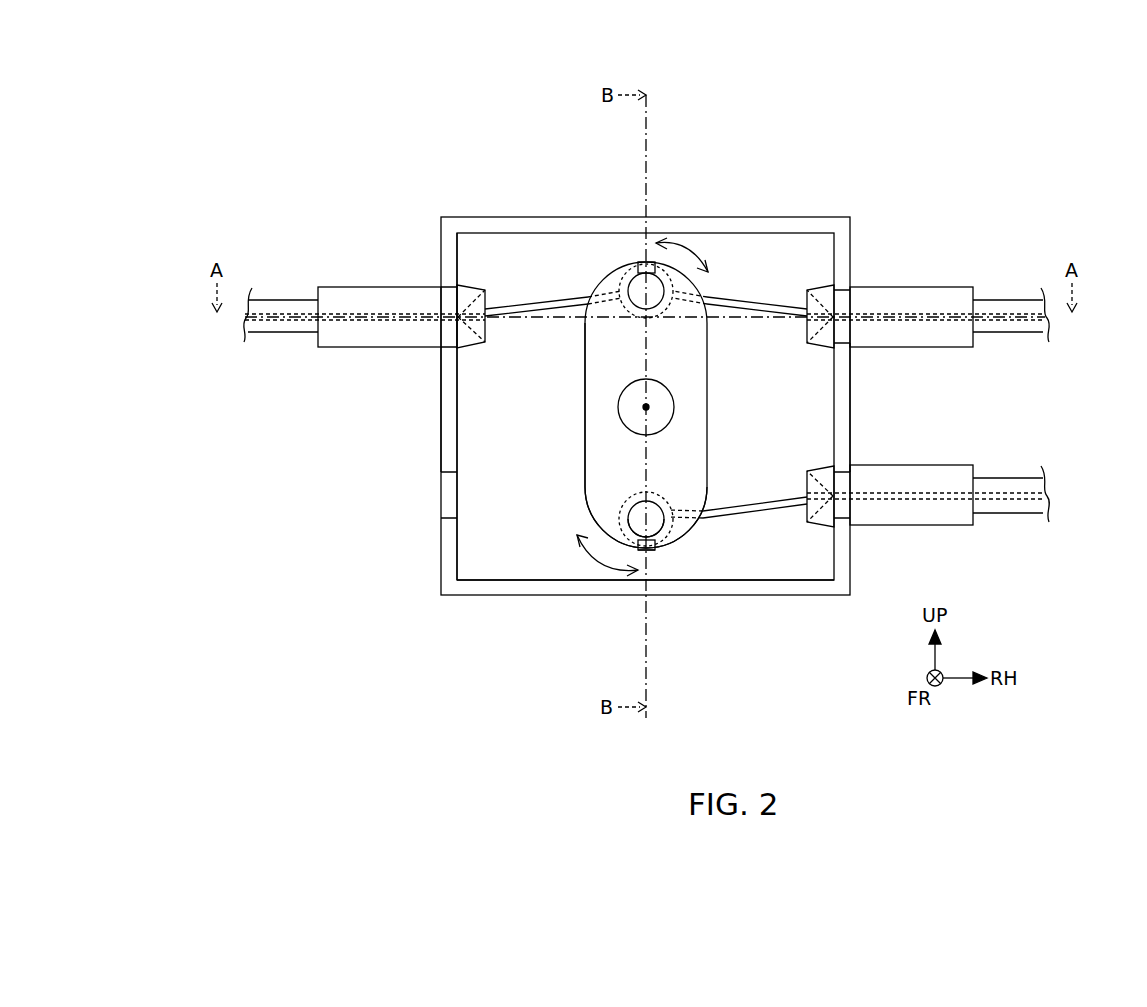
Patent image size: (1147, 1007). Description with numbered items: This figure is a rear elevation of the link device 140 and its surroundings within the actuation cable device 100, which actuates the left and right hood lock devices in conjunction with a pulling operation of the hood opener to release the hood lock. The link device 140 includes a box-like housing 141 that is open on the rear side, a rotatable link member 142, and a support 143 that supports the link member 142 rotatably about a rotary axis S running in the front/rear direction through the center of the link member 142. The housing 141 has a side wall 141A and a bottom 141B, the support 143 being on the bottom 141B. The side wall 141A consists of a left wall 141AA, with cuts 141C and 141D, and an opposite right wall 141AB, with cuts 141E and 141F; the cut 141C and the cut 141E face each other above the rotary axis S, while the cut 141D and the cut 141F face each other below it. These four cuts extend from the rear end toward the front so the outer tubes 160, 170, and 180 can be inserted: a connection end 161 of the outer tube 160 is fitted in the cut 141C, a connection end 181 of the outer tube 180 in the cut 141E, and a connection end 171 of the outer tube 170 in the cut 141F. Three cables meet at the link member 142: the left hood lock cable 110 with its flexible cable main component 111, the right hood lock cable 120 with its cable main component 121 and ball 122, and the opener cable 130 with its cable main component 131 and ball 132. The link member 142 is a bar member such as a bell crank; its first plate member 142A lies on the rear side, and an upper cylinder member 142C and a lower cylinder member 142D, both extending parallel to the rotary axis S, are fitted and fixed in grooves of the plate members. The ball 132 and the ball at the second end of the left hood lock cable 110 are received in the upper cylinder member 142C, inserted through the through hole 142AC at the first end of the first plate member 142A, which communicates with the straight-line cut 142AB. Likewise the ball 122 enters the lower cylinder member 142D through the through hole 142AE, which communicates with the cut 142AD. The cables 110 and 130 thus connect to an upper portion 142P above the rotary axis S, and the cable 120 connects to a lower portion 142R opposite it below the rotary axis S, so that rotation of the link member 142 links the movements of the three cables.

The actuation cable device 100 is at (285, 172).
The left hood lock cable 110 is at (551, 270).
The cable main component 111 is at (508, 302).
The right hood lock cable 120 is at (706, 547).
The cable main component 121 is at (750, 510).
The ball 122 is at (655, 528).
The opener cable 130 is at (807, 268).
The cable main component 131 is at (803, 312).
The ball 132 is at (613, 257).
The link device 140 is at (452, 192).
The housing 141 is at (333, 610).
The side wall 141A is at (428, 568).
The bottom 141B is at (470, 535).
The cut 141C is at (443, 331).
The cut 141D is at (451, 516).
The left wall 141AA is at (447, 458).
The right wall 141AB is at (845, 405).
The cut 141E is at (850, 328).
The cut 141F is at (850, 508).
The link member 142 is at (575, 518).
The first plate member 142A is at (590, 480).
The upper portion 142P is at (710, 262).
The lower portion 142R is at (677, 501).
The cut 142AB is at (646, 262).
The through hole 142AC is at (686, 276).
The cut 142AD is at (650, 550).
The through hole 142AE is at (628, 521).
The upper cylinder member 142C is at (630, 275).
The lower cylinder member 142D is at (636, 546).
The support 143 is at (632, 405).
The rotary axis S is at (646, 407).
The outer tube 160 is at (283, 268).
The connection end 161 is at (320, 350).
The outer tube 170 is at (1040, 435).
The connection end 171 is at (818, 530).
The outer tube 180 is at (1040, 262).
The connection end 181 is at (900, 278).